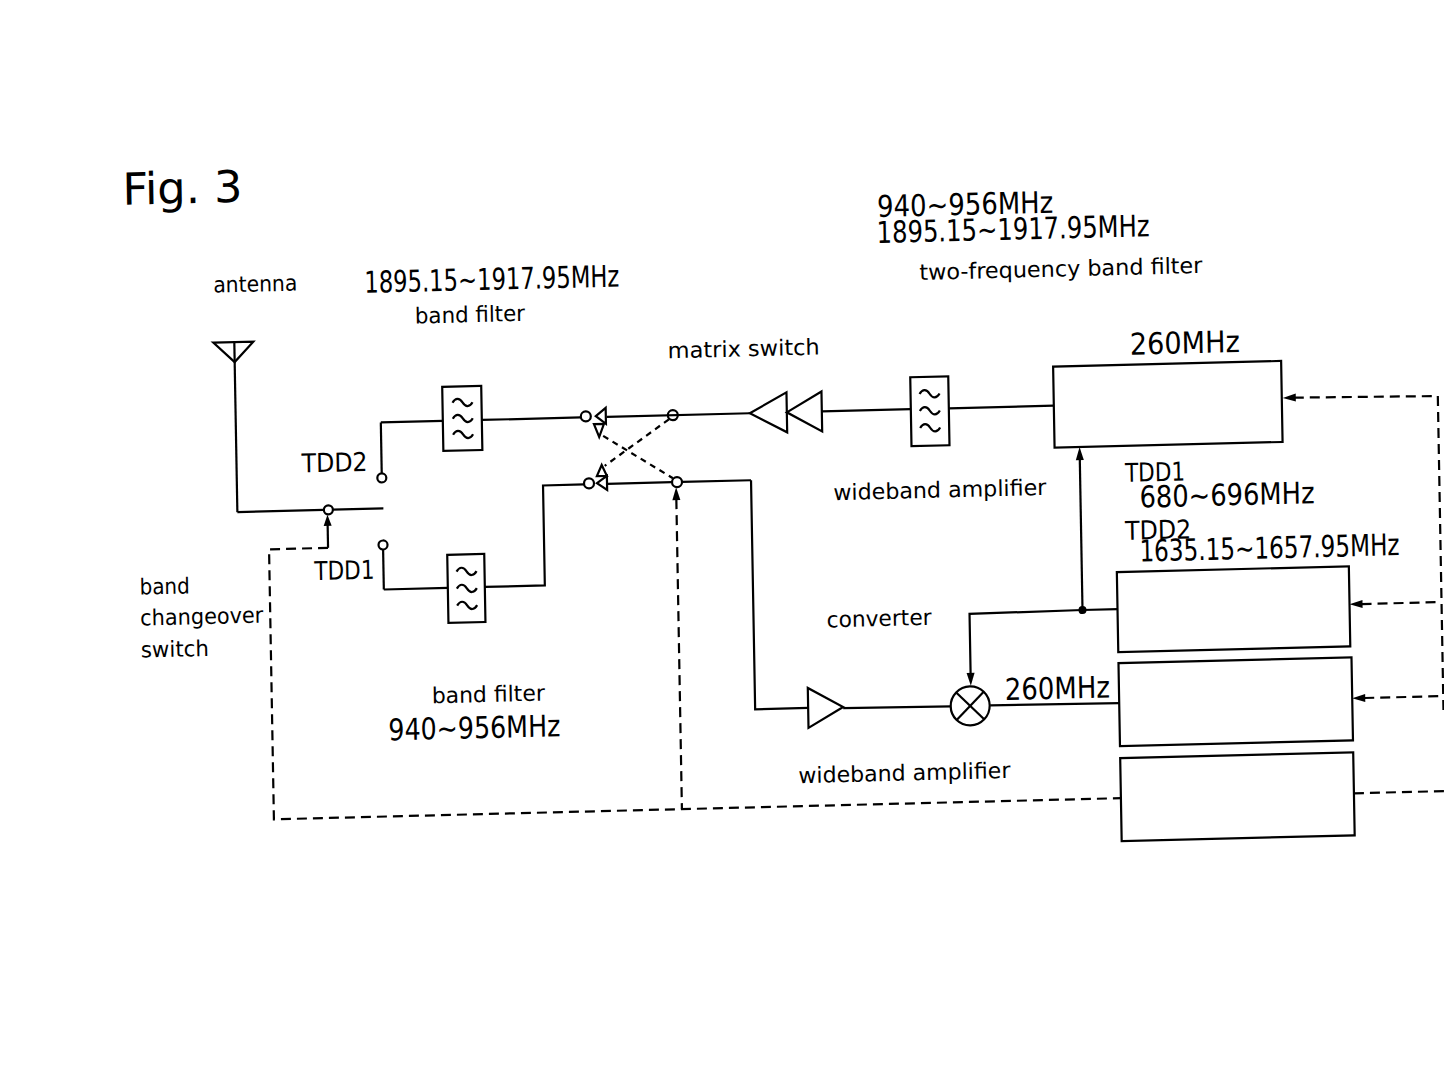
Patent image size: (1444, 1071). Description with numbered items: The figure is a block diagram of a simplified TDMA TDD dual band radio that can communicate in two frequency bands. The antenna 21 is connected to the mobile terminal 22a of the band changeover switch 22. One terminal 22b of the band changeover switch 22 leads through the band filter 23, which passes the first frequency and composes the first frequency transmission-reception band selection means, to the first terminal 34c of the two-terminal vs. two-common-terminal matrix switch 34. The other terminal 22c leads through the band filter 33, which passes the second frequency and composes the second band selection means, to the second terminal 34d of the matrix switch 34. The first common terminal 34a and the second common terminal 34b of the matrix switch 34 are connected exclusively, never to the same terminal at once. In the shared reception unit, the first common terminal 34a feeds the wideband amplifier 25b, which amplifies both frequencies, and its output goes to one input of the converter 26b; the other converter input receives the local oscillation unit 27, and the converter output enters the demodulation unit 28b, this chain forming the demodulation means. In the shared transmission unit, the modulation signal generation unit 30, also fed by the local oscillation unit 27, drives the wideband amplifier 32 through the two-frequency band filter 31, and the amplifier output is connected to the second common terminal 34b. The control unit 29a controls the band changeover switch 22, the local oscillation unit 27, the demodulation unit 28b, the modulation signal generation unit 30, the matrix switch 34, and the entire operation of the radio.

The antenna 21 is at (229, 330).
The band changeover switch 22 is at (324, 502).
The mobile terminal of the band changeover switch 22a is at (643, 658).
The terminal of the band changeover switch 22b is at (387, 534).
The terminal of the band changeover switch 22c is at (387, 472).
The band filter 23 is at (446, 611).
The wideband amplifier 25b is at (804, 724).
The converter 26b is at (950, 703).
The local oscillation unit 27 is at (1348, 601).
The demodulation unit 28b is at (1349, 676).
The control unit 29a is at (1349, 770).
The modulation signal generation unit 30 is at (1271, 374).
The two-frequency band filter 31 is at (916, 382).
The wideband amplifier 32 is at (813, 432).
The band filter 33 is at (451, 376).
The two-terminal vs. two-common-terminal matrix switch 34 is at (621, 451).
The first common terminal 34a is at (683, 486).
The second common terminal 34b is at (679, 418).
The first terminal 34c is at (586, 485).
The second terminal 34d is at (584, 417).